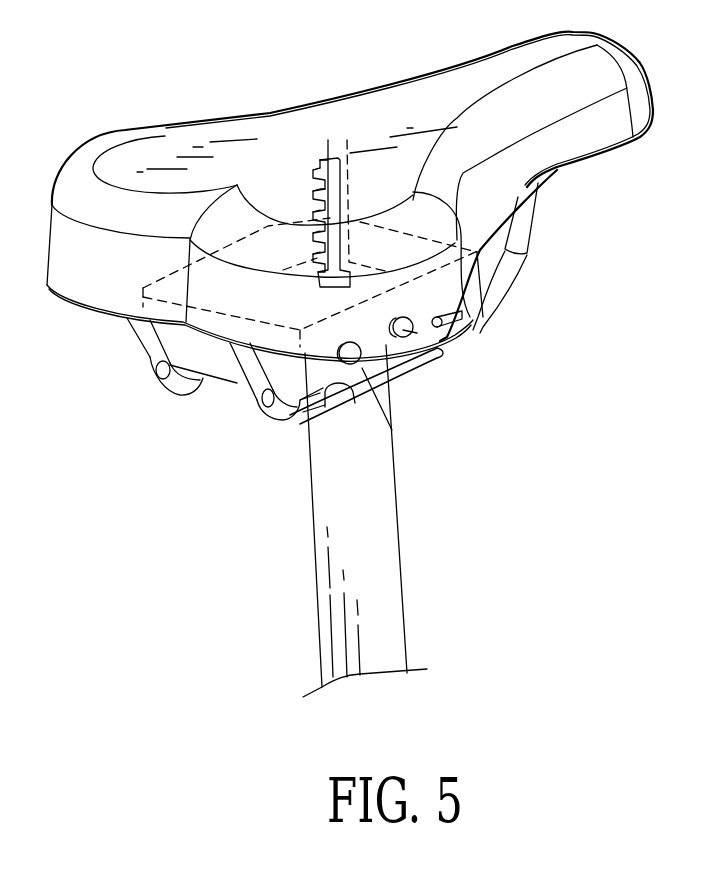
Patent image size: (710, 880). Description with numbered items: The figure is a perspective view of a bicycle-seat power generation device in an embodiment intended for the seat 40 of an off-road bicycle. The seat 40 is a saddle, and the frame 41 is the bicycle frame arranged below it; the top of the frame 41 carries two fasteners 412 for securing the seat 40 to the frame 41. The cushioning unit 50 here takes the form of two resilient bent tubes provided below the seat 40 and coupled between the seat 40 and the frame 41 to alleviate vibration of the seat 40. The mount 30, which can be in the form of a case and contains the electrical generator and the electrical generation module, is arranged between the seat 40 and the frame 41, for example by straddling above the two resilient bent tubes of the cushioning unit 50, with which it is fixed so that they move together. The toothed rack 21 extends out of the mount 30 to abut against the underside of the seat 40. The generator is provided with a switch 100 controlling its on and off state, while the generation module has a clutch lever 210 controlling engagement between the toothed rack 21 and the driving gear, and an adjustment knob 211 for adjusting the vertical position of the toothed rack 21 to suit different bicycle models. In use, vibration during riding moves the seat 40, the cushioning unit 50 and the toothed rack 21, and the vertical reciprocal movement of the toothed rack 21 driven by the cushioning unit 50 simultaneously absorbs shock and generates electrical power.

The seat 40 is at (403, 107).
The toothed rack 21 is at (331, 150).
The cushioning unit 50 is at (523, 214).
The mount 30 is at (230, 363).
The fasteners 412 is at (403, 368).
The adjustment knob 211 is at (440, 360).
The clutch lever 210 is at (463, 333).
The switch 100 is at (352, 364).
The frame 41 is at (383, 600).